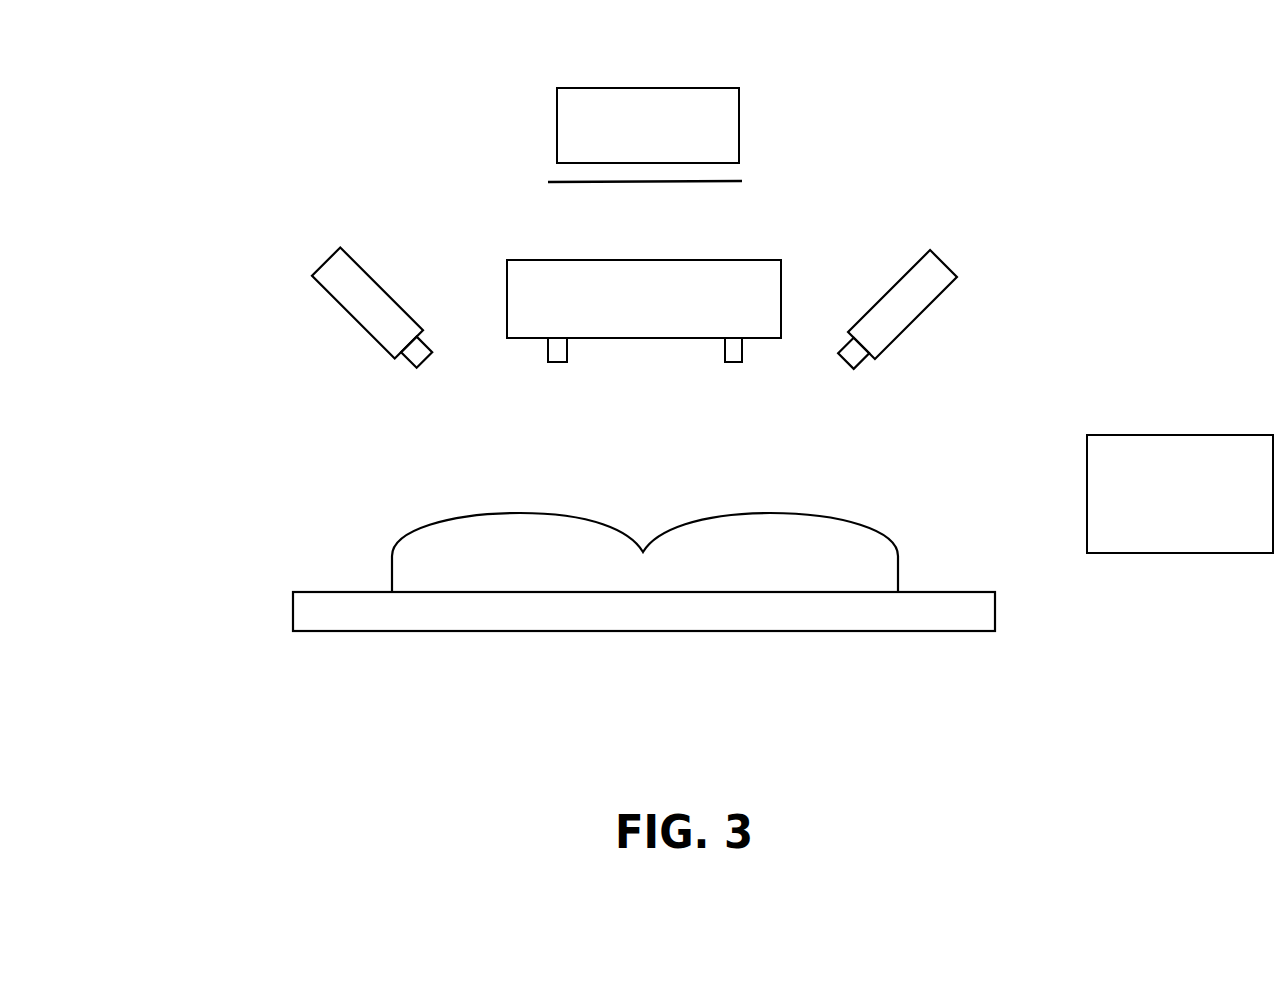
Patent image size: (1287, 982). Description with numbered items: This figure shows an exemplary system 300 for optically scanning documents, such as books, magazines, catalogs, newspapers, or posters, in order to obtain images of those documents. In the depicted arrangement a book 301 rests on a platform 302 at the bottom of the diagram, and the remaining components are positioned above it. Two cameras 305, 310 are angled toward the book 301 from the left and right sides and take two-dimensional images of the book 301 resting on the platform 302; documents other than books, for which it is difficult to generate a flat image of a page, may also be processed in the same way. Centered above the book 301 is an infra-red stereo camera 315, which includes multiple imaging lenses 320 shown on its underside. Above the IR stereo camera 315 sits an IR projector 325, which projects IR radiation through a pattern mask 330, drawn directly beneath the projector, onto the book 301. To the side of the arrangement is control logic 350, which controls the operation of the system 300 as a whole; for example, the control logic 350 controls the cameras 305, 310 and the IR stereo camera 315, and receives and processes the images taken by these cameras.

The system 300 is at (102, 158).
The book 301 is at (431, 525).
The platform 302 is at (985, 592).
The camera 305 is at (316, 270).
The camera 310 is at (928, 252).
The infra-red stereo camera 315 is at (507, 260).
The imaging lenses 320 is at (548, 362).
The IR projector 325 is at (557, 88).
The pattern mask 330 is at (548, 182).
The control logic 350 is at (1087, 435).